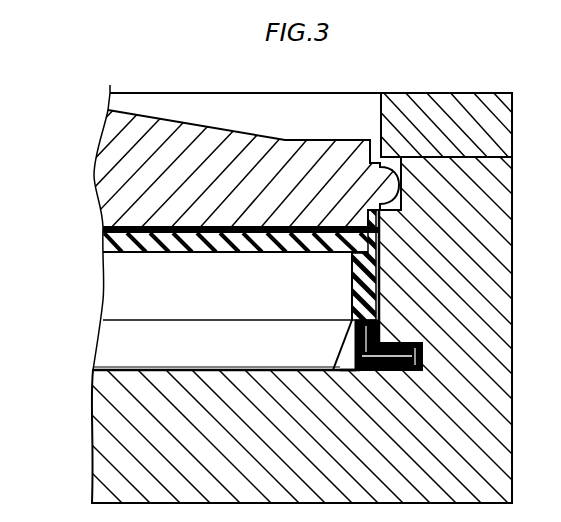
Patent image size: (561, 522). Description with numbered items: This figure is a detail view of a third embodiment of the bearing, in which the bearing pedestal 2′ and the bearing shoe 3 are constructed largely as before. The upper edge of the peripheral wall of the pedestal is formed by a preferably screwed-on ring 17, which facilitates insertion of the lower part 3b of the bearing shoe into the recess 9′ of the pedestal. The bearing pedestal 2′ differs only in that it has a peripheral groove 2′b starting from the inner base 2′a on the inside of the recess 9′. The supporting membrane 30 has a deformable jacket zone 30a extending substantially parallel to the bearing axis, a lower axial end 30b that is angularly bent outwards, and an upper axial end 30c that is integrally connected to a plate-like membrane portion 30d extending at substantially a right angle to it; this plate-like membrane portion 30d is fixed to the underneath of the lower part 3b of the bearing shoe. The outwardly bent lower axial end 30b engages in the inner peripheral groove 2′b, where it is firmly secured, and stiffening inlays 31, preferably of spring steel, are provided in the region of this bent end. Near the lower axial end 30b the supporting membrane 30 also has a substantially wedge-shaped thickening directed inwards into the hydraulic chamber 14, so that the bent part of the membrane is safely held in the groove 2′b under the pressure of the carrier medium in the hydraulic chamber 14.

The bearing shoe 3 is at (253, 141).
The lower part of the bearing shoe 3b is at (240, 160).
The screwed-on ring 17 is at (440, 105).
The bearing pedestal 2′ is at (280, 330).
The inner base 2′a is at (183, 372).
The peripheral groove 2′b is at (414, 373).
The supporting membrane 30 is at (368, 309).
The jacket zone 30a is at (387, 280).
The lower axial end 30b is at (350, 372).
The upper axial end 30c is at (381, 238).
The plate-like membrane portion 30d is at (165, 246).
The hydraulic chamber 14 is at (120, 298).
The recess 9′ is at (383, 318).
The stiffening inlays 31 is at (399, 360).